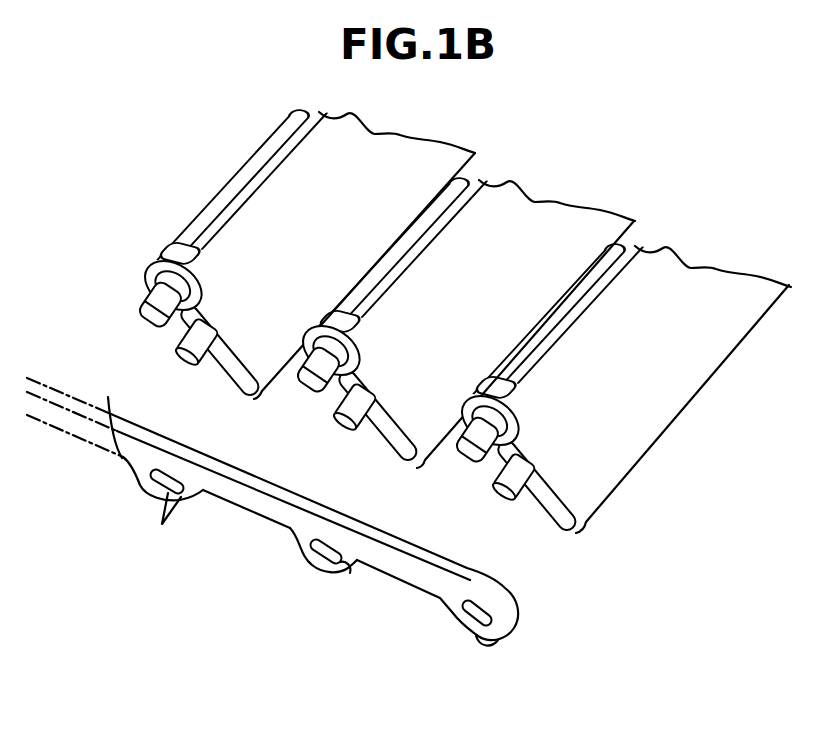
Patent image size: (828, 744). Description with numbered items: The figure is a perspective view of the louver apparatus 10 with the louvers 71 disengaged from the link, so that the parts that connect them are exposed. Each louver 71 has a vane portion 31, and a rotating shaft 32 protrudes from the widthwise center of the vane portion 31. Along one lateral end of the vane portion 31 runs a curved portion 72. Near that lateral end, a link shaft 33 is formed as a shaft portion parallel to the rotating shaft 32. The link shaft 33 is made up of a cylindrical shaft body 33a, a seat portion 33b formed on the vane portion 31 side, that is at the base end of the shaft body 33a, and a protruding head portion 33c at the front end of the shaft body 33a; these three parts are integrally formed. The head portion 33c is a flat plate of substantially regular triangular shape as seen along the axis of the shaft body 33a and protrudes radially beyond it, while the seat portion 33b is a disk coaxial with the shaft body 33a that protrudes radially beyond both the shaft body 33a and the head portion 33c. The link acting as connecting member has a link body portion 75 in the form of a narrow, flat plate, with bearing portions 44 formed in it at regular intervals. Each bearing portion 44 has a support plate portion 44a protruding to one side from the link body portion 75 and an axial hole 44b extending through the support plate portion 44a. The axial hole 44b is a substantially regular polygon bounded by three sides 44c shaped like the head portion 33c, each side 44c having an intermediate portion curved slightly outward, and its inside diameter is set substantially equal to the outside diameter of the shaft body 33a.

The solar cell module mounting structure 10 is at (150, 180).
The vane portion 31 is at (473, 311).
The louver 71 is at (368, 133).
The curved portion 72 is at (260, 183).
The rotating shaft 32 is at (194, 360).
The link shaft 33 is at (144, 314).
The shaft body 33a is at (152, 284).
The seat portion 33b is at (157, 264).
The head portion 33c is at (158, 323).
The link body portion 75 is at (362, 530).
The bearing portion 44 is at (129, 481).
The support plate portion 44a is at (203, 485).
The axial hole 44b is at (158, 496).
The side 44c is at (172, 474).